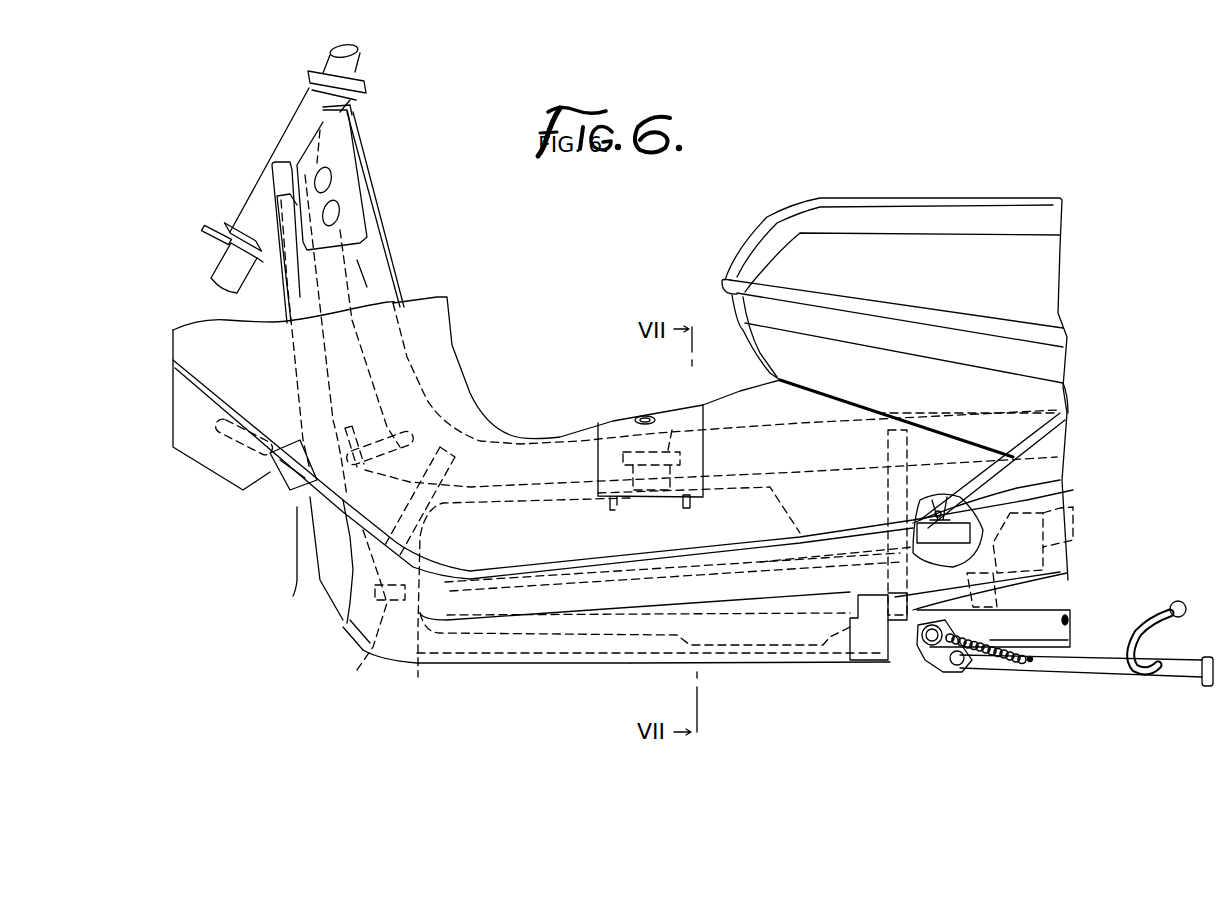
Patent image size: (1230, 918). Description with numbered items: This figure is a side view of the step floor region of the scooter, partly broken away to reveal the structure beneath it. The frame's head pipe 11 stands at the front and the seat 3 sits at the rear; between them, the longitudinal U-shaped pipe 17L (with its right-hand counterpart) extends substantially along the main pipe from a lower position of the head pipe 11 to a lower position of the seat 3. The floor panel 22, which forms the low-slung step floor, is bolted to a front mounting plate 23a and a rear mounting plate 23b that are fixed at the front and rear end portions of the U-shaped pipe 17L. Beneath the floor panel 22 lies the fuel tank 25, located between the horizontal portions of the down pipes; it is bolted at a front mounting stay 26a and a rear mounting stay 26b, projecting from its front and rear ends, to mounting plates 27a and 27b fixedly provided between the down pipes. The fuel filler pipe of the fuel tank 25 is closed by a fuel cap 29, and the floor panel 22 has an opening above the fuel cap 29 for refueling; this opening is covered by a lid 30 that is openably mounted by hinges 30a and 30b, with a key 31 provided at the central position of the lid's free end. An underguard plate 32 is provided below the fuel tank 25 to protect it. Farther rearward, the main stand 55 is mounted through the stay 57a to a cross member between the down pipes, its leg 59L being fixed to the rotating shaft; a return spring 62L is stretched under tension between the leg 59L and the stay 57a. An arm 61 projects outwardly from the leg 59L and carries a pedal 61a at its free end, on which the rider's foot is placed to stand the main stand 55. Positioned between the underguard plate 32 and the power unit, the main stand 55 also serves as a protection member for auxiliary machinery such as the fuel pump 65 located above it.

The seat 3 is at (918, 196).
The head pipe 11 is at (284, 141).
The longitudinal U-shaped pipe 17L is at (294, 598).
The floor panel 22 is at (450, 340).
The mounting plate 23a is at (290, 484).
The mounting plate 23b is at (976, 500).
The fuel tank 25 is at (763, 647).
The mounting stay 26a is at (357, 670).
The mounting stay 26b is at (833, 615).
The mounting plate 27a is at (418, 677).
The mounting plate 27b is at (872, 607).
The fuel cap 29 is at (672, 430).
The lid 30 is at (603, 432).
The hinge 30a is at (687, 502).
The hinge 30b is at (610, 511).
The key 31 is at (641, 415).
The underguard plate 32 is at (590, 664).
The main stand 55 is at (1015, 682).
The stay 57a is at (944, 660).
The leg 59L is at (1060, 679).
The arm 61 is at (1127, 633).
The pedal 61a is at (1170, 603).
The return spring 62L is at (1030, 661).
The fuel pump 65 is at (1073, 510).